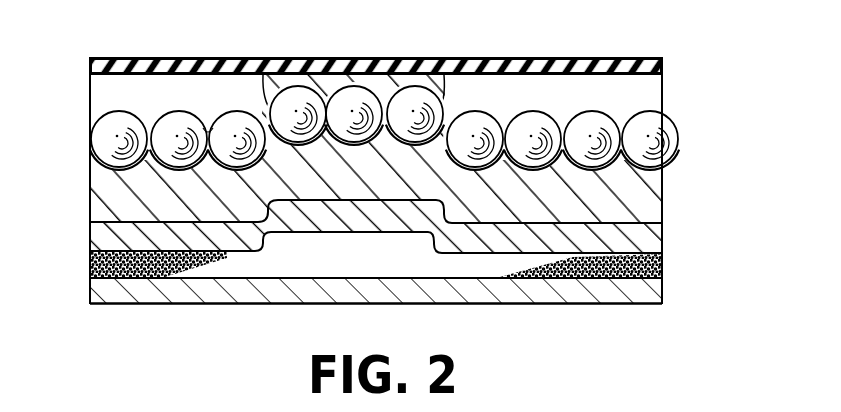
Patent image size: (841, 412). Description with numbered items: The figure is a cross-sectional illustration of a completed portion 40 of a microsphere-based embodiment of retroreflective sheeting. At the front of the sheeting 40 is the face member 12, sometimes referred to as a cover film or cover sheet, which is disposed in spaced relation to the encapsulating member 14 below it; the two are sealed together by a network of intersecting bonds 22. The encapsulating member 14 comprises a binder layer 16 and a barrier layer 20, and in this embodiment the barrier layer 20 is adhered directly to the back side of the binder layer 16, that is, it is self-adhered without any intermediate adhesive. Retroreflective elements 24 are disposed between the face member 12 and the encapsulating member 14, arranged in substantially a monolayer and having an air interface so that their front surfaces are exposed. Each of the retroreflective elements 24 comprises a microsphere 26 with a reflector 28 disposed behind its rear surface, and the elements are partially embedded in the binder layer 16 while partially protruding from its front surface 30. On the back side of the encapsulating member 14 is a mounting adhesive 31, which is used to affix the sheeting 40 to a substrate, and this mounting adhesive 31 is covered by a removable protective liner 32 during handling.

The face member 12 is at (634, 57).
The encapsulating member 14 is at (452, 170).
The binder layer 16 is at (664, 197).
The barrier layer 20 is at (663, 238).
The network of intersecting bonds 22 is at (372, 57).
The retroreflective elements 24 is at (78, 116).
The microspheres 26 is at (519, 115).
The reflectors 28 is at (664, 168).
The front surface 30 is at (208, 133).
The mounting adhesive 31 is at (663, 264).
The removable protective liner 32 is at (651, 312).
The completed portion of retroreflective sheeting 40 is at (527, 46).